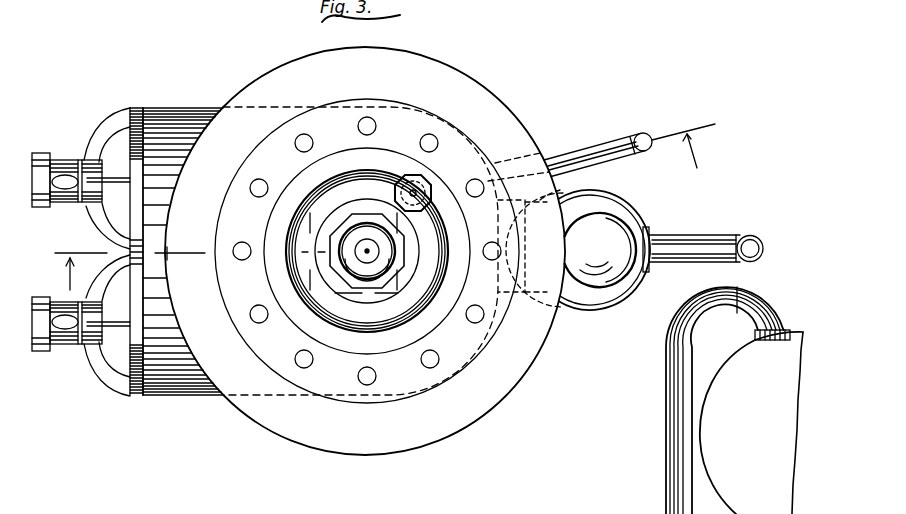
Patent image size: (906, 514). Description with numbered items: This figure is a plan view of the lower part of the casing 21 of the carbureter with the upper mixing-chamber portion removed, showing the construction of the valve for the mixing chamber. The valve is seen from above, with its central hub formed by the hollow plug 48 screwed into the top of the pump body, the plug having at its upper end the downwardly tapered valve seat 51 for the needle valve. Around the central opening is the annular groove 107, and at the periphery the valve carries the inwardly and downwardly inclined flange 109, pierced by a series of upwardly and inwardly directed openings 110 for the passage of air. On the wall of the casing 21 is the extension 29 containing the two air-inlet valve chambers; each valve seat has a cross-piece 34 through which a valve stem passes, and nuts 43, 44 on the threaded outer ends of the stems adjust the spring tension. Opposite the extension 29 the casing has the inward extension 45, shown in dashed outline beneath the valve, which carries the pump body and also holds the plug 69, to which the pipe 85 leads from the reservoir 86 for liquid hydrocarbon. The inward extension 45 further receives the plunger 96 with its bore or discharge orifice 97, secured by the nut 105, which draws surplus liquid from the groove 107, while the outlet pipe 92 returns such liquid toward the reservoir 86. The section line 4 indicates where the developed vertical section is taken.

The section line 4- 4 is at (384, 202).
The lower part of casing 21 is at (278, 73).
The extension 29 is at (180, 112).
The cross-piece 34 is at (113, 178).
The nut 43 is at (70, 186).
The nut 44 is at (43, 207).
The inward extension 45 is at (476, 160).
The hollow plug 48 is at (348, 242).
The valve seat 51 is at (367, 247).
The plug 69 is at (574, 250).
The pipe 85 is at (718, 241).
The reservoir 86 is at (734, 400).
The outlet pipe 92 is at (597, 141).
The plunger 96 is at (429, 180).
The bore or discharge orifice 97 is at (431, 197).
The nut 105 is at (400, 175).
The annular groove 107 is at (387, 329).
The inclined flange 109 is at (407, 378).
The openings 110 is at (358, 126).